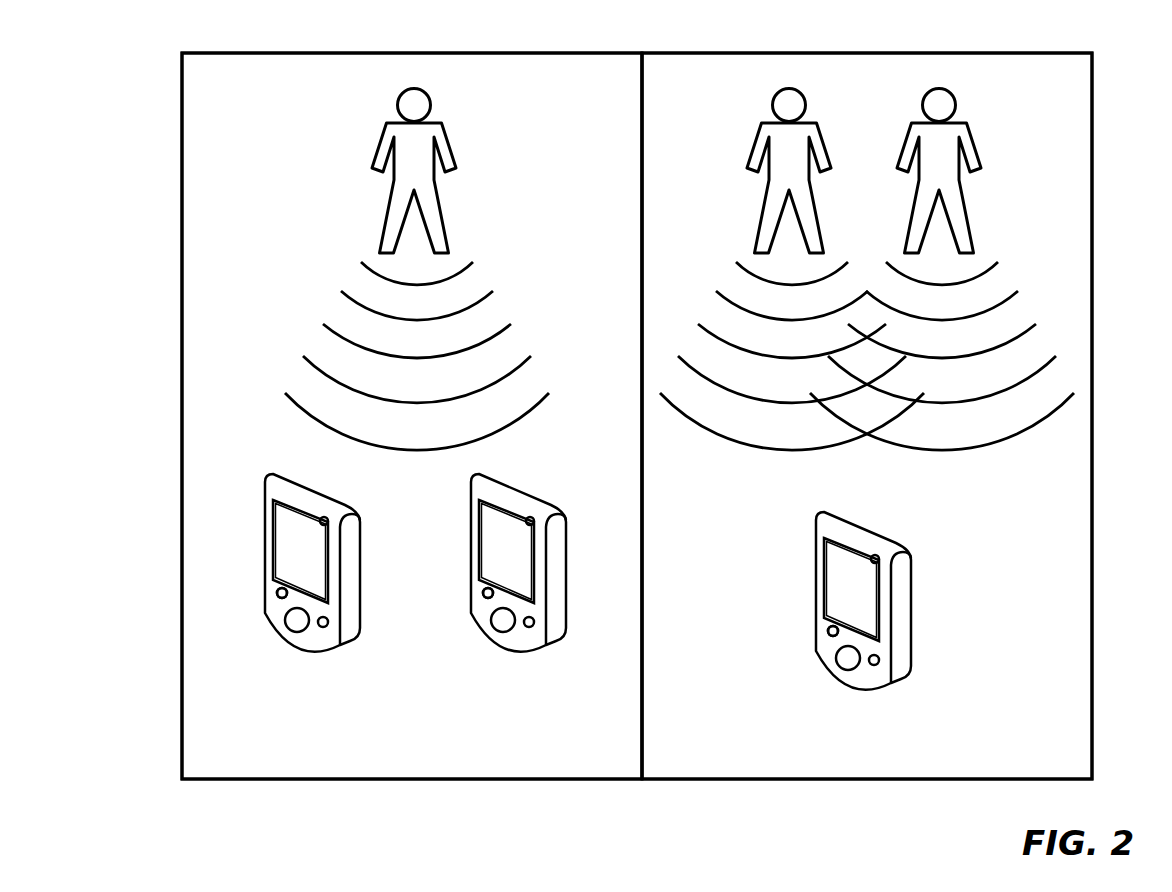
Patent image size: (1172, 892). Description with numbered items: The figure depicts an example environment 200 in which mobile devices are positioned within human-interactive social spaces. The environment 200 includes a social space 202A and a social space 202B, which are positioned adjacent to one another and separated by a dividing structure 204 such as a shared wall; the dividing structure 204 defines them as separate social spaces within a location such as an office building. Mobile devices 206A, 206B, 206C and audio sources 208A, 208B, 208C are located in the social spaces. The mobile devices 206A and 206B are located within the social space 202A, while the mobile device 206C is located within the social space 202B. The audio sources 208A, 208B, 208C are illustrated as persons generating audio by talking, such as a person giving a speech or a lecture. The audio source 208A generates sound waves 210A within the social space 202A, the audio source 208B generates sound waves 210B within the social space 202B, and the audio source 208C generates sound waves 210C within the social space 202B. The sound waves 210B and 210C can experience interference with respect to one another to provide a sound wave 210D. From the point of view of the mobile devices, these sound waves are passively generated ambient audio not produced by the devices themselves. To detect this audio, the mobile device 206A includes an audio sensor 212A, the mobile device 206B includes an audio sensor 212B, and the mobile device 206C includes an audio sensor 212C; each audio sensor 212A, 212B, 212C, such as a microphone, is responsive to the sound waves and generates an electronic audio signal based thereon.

The environment 200 is at (94, 100).
The social space 202A is at (268, 743).
The social space 202B is at (722, 737).
The dividing structure 204 is at (642, 88).
The mobile device 206A is at (273, 474).
The mobile device 206B is at (470, 513).
The mobile device 206C is at (814, 550).
The audio source 208A is at (359, 137).
The audio source 208B is at (729, 148).
The audio source 208C is at (1005, 128).
The sound waves 210A is at (297, 300).
The sound waves 210B is at (707, 256).
The sound waves 210C is at (1022, 250).
The sound wave 210D is at (882, 466).
The audio sensor 212A is at (277, 592).
The audio sensor 212B is at (482, 594).
The audio sensor 212C is at (826, 628).